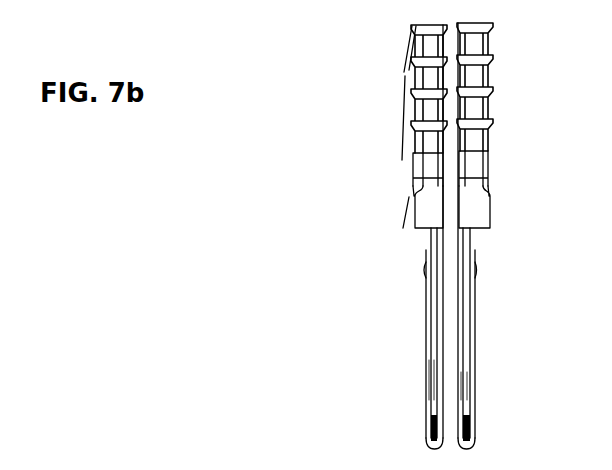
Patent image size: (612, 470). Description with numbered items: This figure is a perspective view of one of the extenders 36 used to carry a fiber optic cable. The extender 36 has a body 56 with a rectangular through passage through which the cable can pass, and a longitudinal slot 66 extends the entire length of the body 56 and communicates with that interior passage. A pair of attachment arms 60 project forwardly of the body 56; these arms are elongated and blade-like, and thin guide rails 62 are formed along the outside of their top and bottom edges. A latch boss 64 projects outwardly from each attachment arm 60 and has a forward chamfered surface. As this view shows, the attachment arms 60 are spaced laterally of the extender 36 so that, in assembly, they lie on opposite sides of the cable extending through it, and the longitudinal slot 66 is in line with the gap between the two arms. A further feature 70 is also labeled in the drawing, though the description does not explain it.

The extender 36 is at (404, 186).
The longitudinal slot 66 is at (416, 90).
The body 56 is at (473, 145).
The shoulder 70 is at (483, 237).
The latch boss 64 is at (424, 272).
The guide rails 62 is at (436, 312).
The attachment arms 60 is at (463, 372).